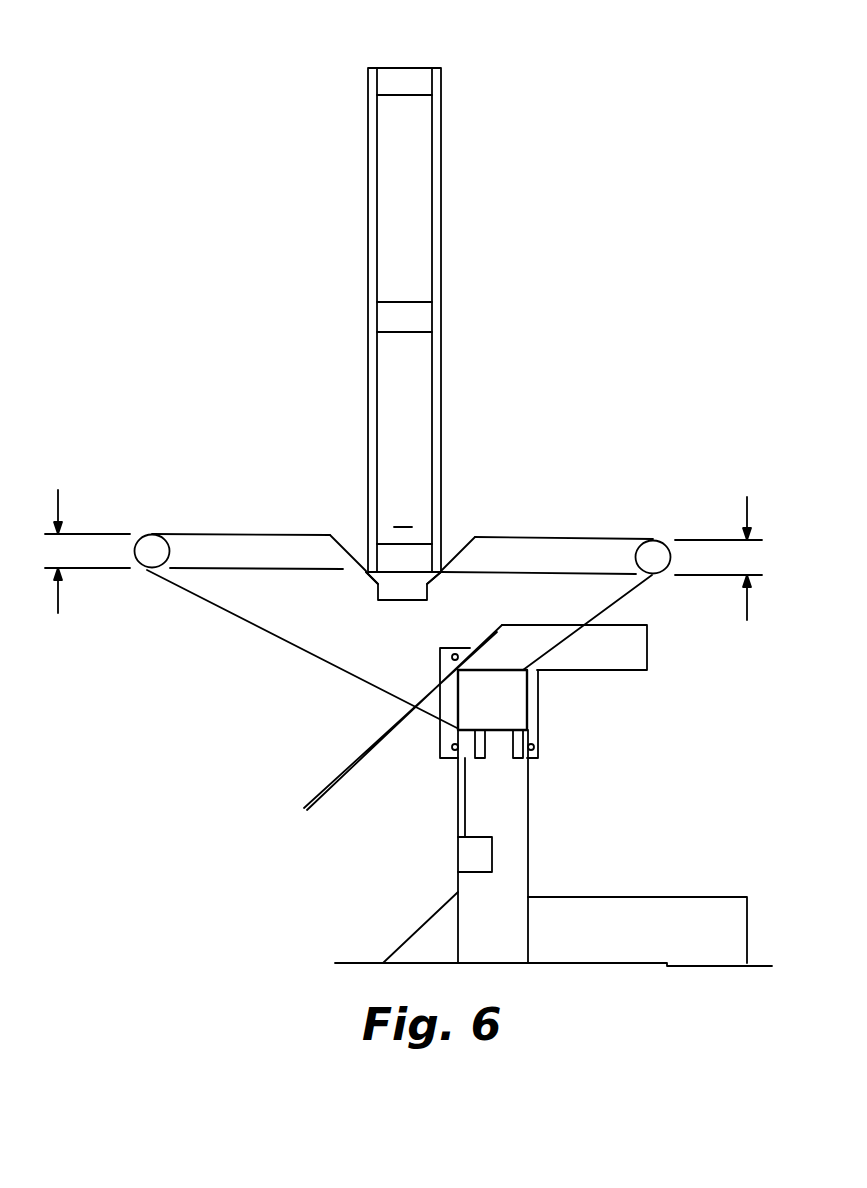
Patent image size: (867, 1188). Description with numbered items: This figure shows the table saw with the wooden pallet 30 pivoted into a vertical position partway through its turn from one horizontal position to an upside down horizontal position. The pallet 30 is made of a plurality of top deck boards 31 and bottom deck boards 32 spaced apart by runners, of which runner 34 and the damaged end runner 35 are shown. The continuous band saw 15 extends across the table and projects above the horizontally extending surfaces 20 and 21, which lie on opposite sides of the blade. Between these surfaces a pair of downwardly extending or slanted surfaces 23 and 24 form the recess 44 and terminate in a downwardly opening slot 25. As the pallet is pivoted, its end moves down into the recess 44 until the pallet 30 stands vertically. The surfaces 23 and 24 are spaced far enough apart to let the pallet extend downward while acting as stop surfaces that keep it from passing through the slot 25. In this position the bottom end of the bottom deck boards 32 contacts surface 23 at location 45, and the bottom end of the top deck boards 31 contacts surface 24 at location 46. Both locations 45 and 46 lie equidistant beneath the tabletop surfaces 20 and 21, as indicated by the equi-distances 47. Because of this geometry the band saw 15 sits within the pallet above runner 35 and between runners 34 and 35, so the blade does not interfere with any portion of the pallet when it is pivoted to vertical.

The continuous band saw 15 is at (405, 525).
The horizontally extending surface 20 is at (216, 534).
The horizontally extending surface 21 is at (566, 538).
The downwardly extending surface 23 is at (345, 566).
The downwardly extending surface 24 is at (465, 553).
The slot 25 is at (395, 600).
The wooden pallet 30 is at (441, 82).
The top deck boards 31 is at (441, 165).
The bottom deck boards 32 is at (368, 80).
The runner 34 is at (387, 318).
The runner 35 is at (380, 550).
The recess 44 is at (460, 531).
The location 45 is at (366, 580).
The location 46 is at (445, 578).
The equi-distances 47 is at (404, 555).